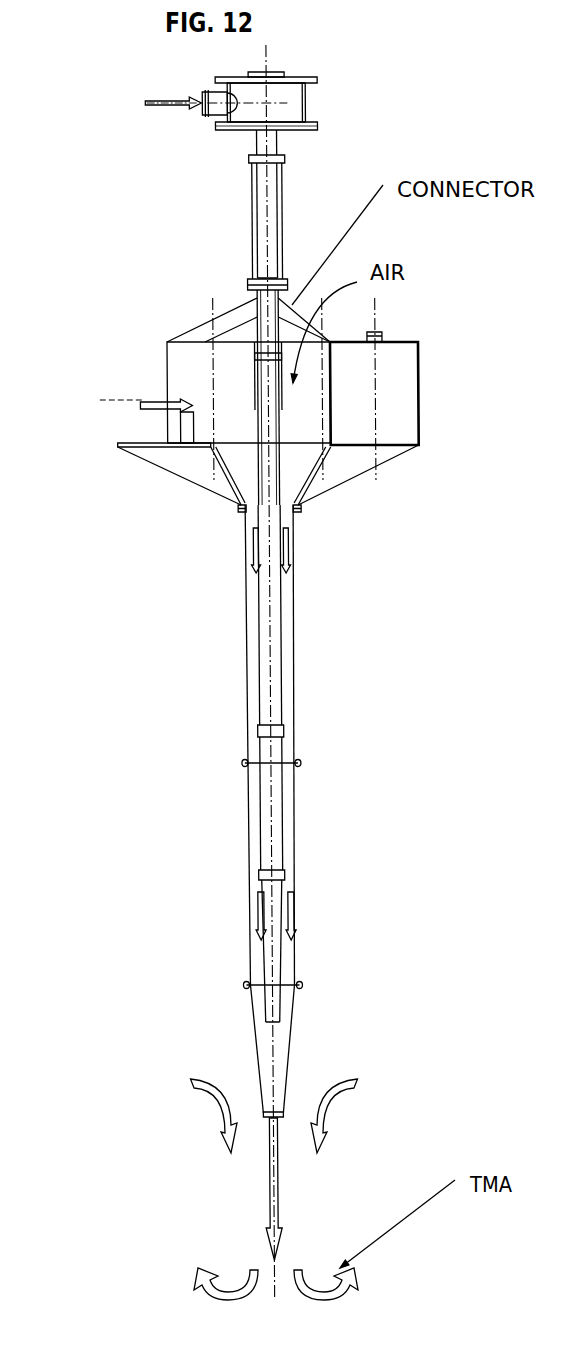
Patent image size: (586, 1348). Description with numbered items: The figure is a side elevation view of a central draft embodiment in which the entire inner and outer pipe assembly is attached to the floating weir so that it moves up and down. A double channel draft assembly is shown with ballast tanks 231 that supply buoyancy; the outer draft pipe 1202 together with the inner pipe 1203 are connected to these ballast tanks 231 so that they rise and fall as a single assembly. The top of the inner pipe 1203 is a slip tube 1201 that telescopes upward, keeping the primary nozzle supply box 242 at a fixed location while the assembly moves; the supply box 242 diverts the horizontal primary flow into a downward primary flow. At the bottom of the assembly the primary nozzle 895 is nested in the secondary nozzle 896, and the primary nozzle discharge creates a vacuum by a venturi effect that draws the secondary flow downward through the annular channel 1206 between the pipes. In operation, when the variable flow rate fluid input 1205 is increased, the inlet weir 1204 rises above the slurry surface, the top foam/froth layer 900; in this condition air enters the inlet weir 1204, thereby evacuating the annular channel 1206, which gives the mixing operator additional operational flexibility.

The primary nozzle supply box 242 is at (305, 107).
The variable flow rate fluid input 1205 is at (182, 110).
The slip tube 1201 is at (255, 248).
The ballast tanks 231 is at (190, 363).
The top foam/froth layer 900 is at (117, 398).
The inlet weir 1204 is at (185, 433).
The outer draft pipe 1202 is at (290, 667).
The inner pipe 1203 is at (275, 825).
The annular channel 1206 is at (290, 910).
The primary nozzle 895 is at (293, 1007).
The secondary nozzle 896 is at (270, 1115).